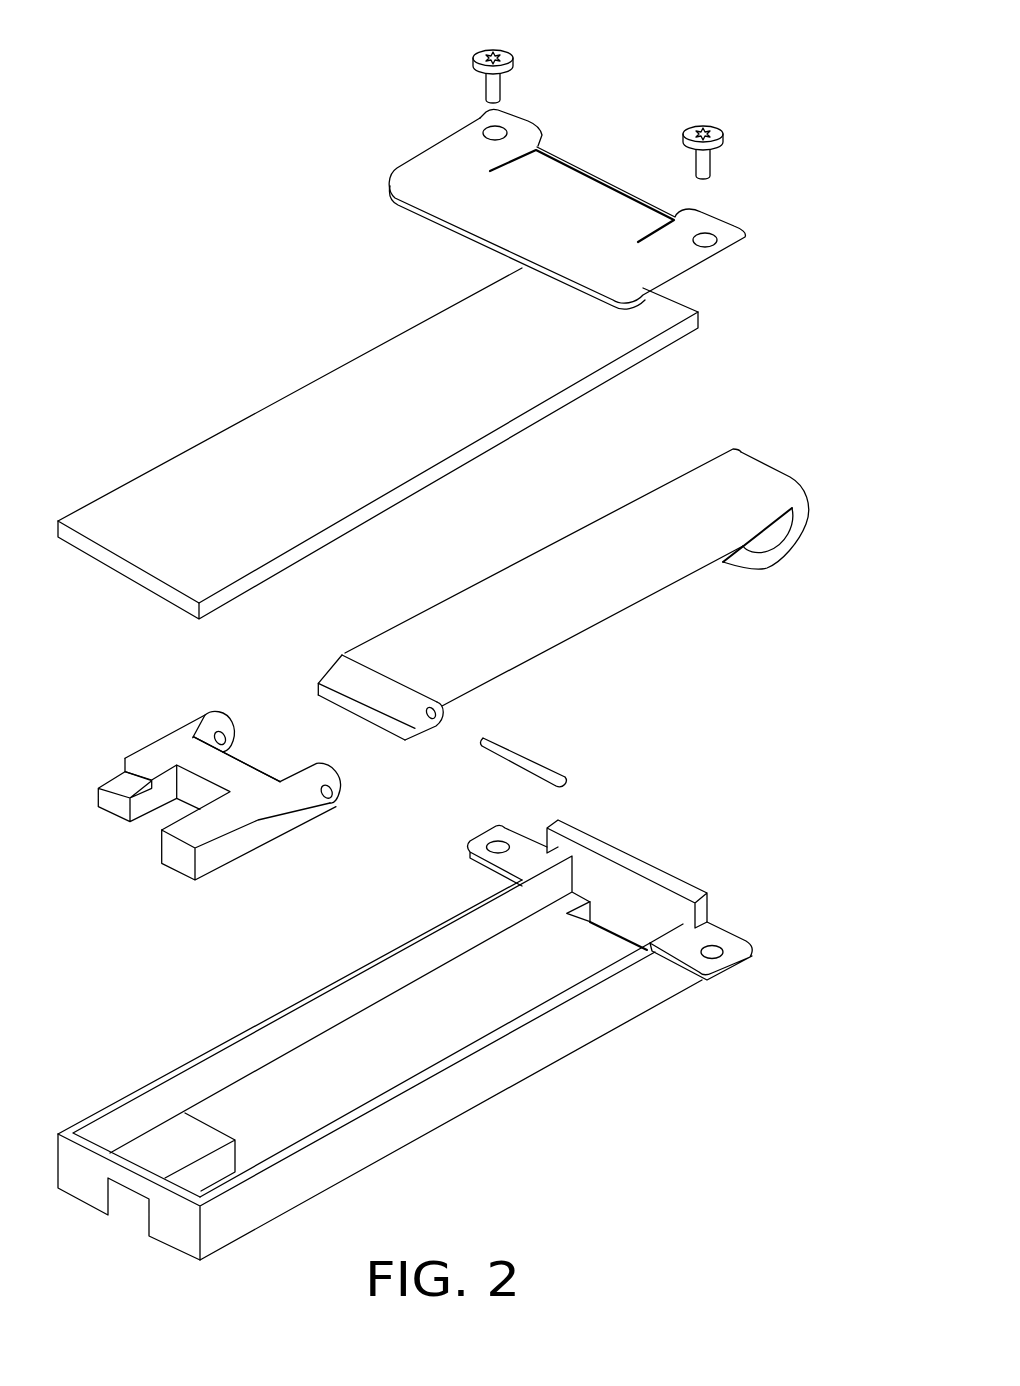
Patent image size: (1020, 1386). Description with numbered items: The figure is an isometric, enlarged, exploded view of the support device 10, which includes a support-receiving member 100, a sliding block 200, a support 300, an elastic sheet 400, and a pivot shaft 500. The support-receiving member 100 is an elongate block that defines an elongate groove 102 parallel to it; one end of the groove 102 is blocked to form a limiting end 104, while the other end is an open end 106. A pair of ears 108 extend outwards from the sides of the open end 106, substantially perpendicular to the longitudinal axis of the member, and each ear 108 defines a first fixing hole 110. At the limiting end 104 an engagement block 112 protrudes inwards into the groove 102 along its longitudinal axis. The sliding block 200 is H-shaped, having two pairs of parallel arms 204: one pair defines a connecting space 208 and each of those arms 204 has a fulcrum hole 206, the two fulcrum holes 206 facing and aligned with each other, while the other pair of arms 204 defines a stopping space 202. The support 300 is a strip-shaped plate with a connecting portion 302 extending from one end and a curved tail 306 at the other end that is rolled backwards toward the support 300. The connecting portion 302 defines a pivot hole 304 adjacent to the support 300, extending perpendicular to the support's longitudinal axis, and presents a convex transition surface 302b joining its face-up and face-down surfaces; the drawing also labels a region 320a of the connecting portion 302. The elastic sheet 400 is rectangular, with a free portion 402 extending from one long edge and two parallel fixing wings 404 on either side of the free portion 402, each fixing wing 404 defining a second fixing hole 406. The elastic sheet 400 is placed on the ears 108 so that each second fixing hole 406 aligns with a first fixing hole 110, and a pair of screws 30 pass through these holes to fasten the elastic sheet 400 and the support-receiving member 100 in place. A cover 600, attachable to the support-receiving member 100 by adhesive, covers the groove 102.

The support device 10 is at (430, 15).
The screw 30 is at (508, 51).
The support-receiving member 100 is at (430, 1044).
The groove 102 is at (367, 1050).
The limiting end 104 is at (87, 1178).
The open end 106 is at (630, 895).
The ear 108 is at (646, 926).
The first fixing hole 110 is at (716, 956).
The engagement block 112 is at (175, 1141).
The sliding block 200 is at (209, 779).
The stopping space 202 is at (145, 830).
The arm 204 is at (210, 712).
The fulcrum hole 206 is at (232, 740).
The connecting space 208 is at (262, 763).
The support 300 is at (533, 633).
The connecting portion 302 is at (418, 725).
The transition surface 302b is at (398, 733).
The pivot hole 304 is at (442, 713).
The tail 306 is at (793, 543).
The end portion of hinge block 320a is at (327, 678).
The elastic sheet 400 is at (534, 191).
The free portion 402 is at (568, 197).
The fixing wing 404 is at (512, 125).
The second fixing hole 406 is at (488, 135).
The pivot shaft 500 is at (533, 765).
The cover 600 is at (260, 418).